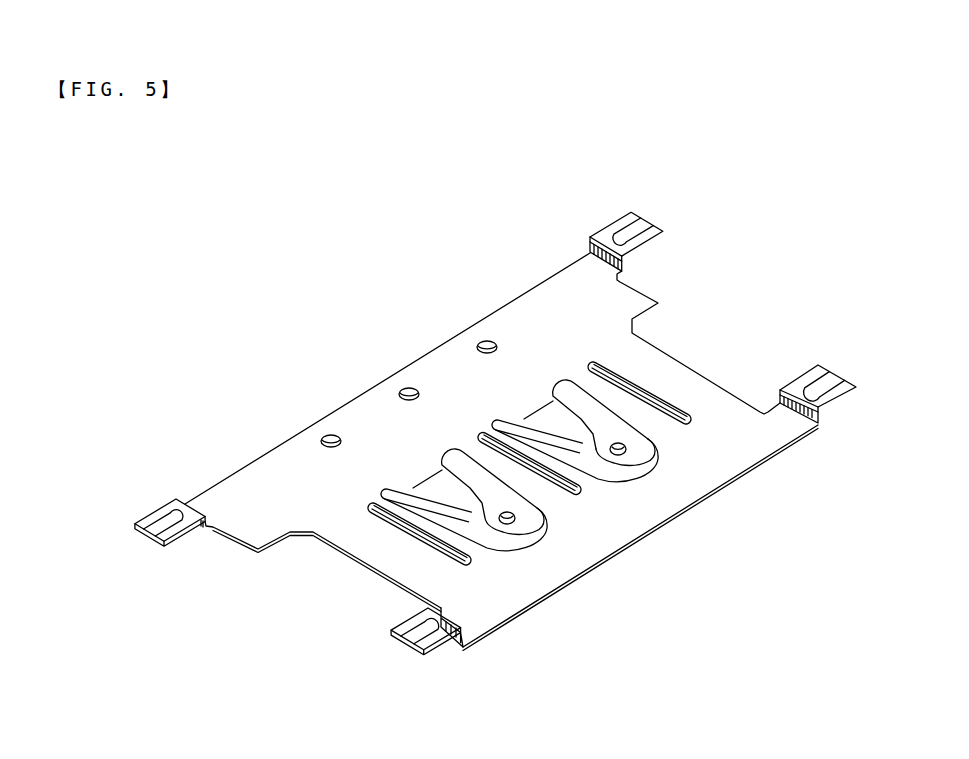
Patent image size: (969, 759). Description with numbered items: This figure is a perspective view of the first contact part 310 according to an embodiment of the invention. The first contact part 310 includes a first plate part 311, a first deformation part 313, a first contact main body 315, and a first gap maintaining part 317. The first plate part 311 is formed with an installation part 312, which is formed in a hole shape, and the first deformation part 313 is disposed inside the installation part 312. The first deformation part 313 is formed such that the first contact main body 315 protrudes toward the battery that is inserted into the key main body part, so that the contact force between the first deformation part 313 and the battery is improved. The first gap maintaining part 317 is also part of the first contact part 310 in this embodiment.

The first contact part 310 is at (470, 238).
The first plate part 311 is at (264, 470).
The installation part 312 is at (627, 447).
The first deformation part 313 is at (571, 421).
The first contact main body 315 is at (637, 448).
The first gap maintaining part 317 is at (547, 480).